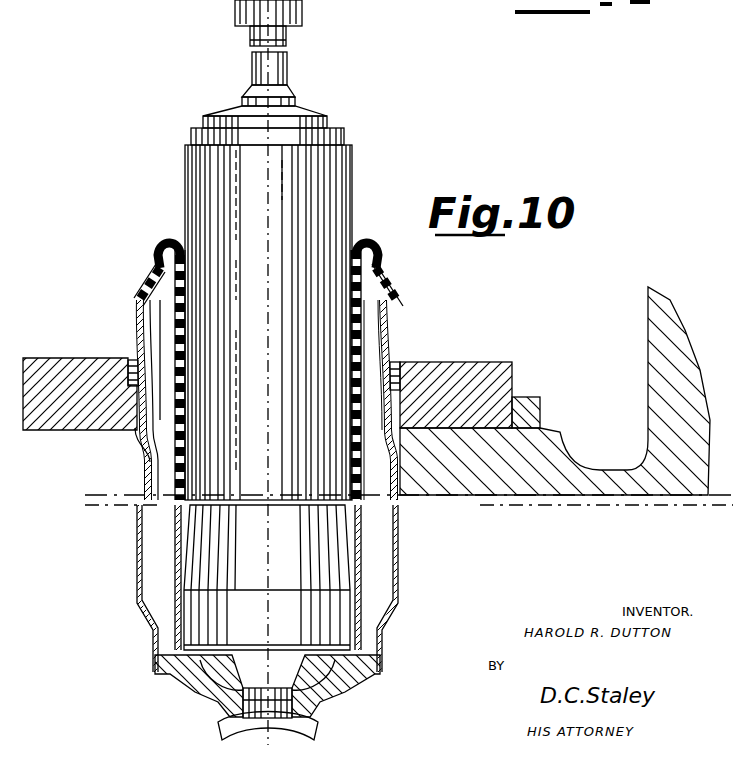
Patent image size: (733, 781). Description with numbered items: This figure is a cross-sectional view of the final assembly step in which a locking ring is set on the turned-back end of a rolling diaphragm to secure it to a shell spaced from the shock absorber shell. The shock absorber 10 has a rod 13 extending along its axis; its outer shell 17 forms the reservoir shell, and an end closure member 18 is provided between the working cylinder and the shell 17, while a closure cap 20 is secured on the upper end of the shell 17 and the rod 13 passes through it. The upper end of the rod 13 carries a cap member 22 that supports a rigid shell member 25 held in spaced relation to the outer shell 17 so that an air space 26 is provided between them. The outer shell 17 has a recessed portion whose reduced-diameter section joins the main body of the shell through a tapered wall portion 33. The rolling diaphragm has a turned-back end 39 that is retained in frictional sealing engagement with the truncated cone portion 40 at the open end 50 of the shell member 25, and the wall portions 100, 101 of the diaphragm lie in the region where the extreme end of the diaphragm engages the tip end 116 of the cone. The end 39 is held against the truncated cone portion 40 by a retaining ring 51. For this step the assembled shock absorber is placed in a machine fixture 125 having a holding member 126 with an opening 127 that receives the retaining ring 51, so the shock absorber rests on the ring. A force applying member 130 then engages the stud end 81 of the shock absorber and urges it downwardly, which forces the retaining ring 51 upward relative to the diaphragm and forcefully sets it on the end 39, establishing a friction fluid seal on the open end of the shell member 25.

The shock absorber 10 is at (358, 140).
The rod 13 is at (258, 702).
The outer shell 17 is at (240, 175).
The end closure member 18 is at (306, 119).
The closure cap 20 is at (228, 662).
The cap member 22 is at (340, 675).
The shell member 25 is at (137, 560).
The air space 26 is at (162, 368).
The tapered wall portion 33 is at (188, 545).
The end of the rolling diaphragm 39 is at (142, 425).
The truncated cone portion 40 is at (176, 388).
The open end 50 is at (137, 306).
The retaining ring 51 is at (130, 360).
The stud end 81 is at (270, 65).
The wall portion 100 is at (150, 292).
The wall portion 101 is at (186, 292).
The tip end 116 is at (382, 300).
The machine fixture 125 is at (528, 397).
The holding member 126 is at (487, 362).
The opening 127 is at (402, 372).
The force applying member 130 is at (262, 5).